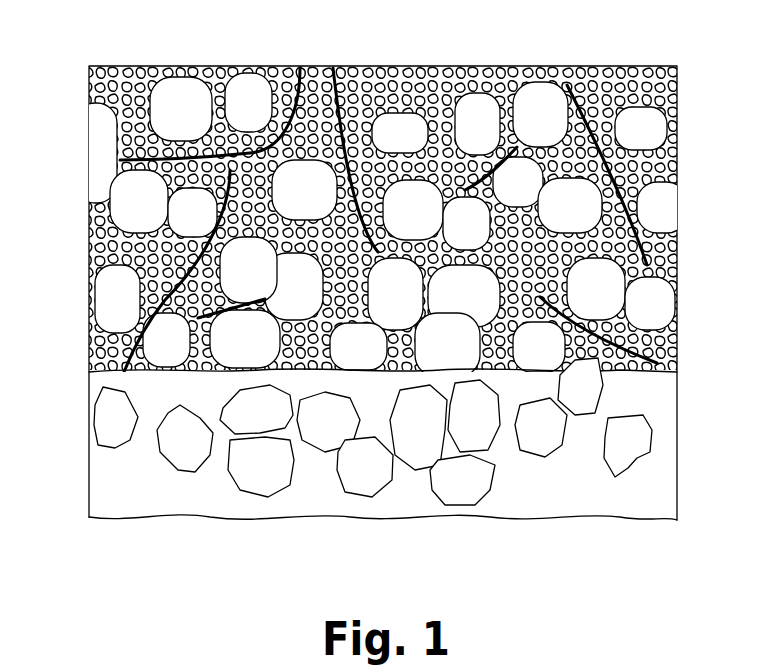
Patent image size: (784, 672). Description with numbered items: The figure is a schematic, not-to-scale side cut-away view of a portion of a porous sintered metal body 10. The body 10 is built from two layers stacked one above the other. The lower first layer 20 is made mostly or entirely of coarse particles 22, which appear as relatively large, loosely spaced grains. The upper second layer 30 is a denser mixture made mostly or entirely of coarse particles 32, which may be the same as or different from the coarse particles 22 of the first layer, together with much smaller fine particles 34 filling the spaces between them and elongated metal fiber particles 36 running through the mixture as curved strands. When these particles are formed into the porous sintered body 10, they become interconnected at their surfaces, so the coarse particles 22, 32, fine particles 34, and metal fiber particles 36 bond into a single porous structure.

The body 10 is at (113, 585).
The first layer 20 is at (688, 378).
The coarse particles 22 is at (192, 471).
The second layer 30 is at (688, 66).
The coarse particles 32 is at (178, 77).
The fine particles 34 is at (92, 228).
The metal fiber particles 36 is at (335, 68).